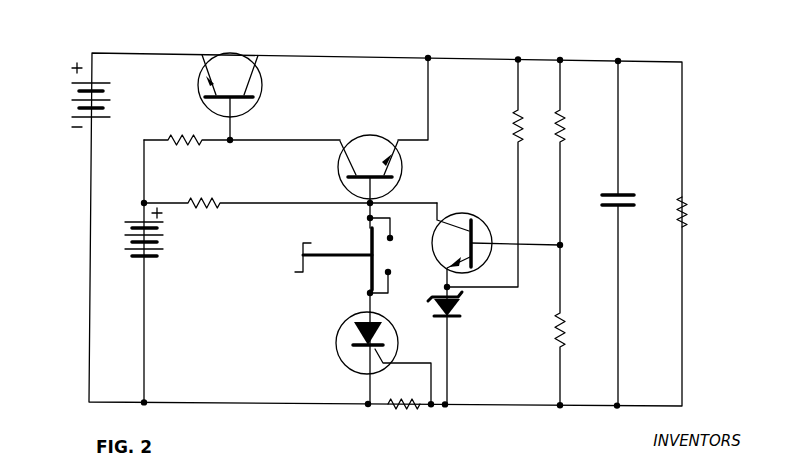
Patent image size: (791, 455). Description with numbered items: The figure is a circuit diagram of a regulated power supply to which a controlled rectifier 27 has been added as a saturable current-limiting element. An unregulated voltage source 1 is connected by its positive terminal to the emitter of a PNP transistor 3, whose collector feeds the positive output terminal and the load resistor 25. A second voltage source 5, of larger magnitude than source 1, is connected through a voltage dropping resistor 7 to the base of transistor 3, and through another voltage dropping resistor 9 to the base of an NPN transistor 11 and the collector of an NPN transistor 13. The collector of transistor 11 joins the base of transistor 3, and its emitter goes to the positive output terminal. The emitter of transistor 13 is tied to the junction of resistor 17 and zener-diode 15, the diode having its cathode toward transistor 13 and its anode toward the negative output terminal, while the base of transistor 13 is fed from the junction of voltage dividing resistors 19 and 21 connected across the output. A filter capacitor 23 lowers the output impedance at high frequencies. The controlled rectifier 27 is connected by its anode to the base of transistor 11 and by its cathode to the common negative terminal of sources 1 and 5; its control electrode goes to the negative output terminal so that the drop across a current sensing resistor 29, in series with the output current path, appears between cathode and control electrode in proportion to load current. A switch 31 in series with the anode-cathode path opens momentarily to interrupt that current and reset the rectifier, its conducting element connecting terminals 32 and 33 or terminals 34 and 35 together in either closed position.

The unregulated voltage source 1 is at (104, 84).
The PNP transistor 3 is at (226, 62).
The voltage source 5 is at (160, 239).
The voltage dropping resistor 7 is at (192, 137).
The voltage dropping resistor 9 is at (206, 198).
The NPN transistor 11 is at (366, 152).
The NPN transistor 13 is at (466, 221).
The zener-diode 15 is at (460, 305).
The resistor 17 is at (520, 141).
The voltage dividing resistor 19 is at (562, 133).
The voltage dividing resistor 21 is at (563, 326).
The filter capacitor 23 is at (633, 196).
The load resistor 25 is at (685, 196).
The controlled rectifier 27 is at (348, 332).
The current sensing resistor 29 is at (400, 408).
The switch 31 is at (322, 252).
The terminal 32 is at (368, 236).
The terminal 33 is at (370, 278).
The terminal 34 is at (391, 238).
The terminal 35 is at (389, 272).